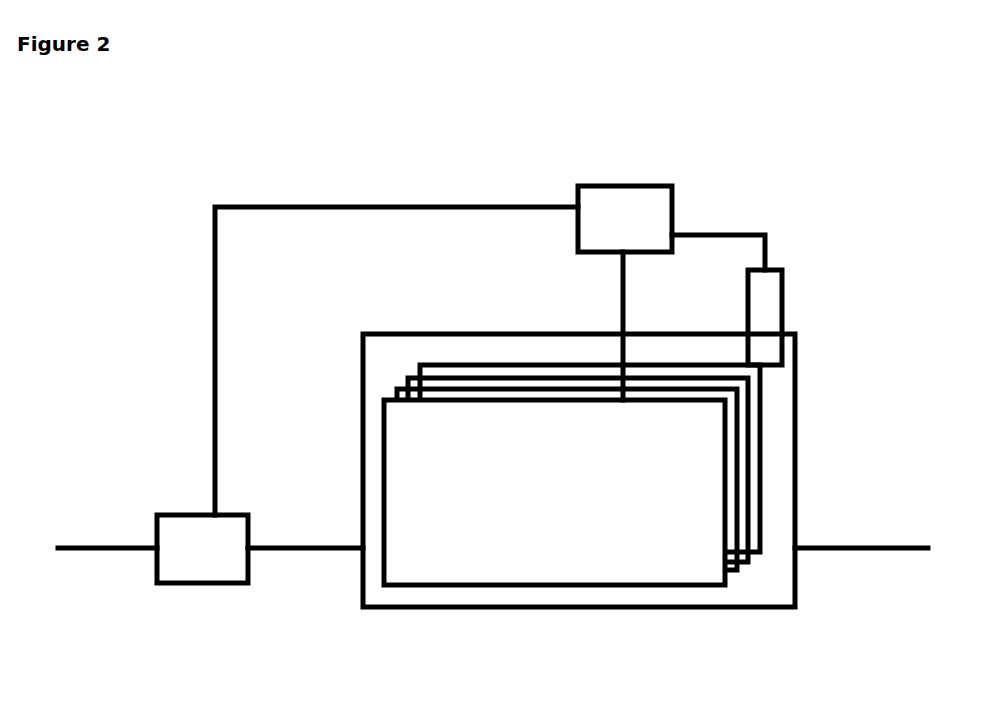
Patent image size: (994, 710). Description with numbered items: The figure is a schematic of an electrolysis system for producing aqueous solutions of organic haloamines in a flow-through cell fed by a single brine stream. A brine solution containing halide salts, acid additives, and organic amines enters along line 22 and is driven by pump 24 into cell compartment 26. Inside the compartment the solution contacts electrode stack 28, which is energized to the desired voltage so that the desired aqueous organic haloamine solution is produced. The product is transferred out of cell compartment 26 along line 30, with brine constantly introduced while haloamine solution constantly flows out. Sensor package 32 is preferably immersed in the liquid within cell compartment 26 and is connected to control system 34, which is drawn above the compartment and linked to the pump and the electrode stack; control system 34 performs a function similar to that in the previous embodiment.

The line 22 is at (126, 541).
The pump 24 is at (192, 530).
The cell compartment 26 is at (432, 333).
The electrode stack 28 is at (544, 450).
The line 30 is at (821, 558).
The sensor package 32 is at (768, 300).
The control system 34 is at (634, 198).